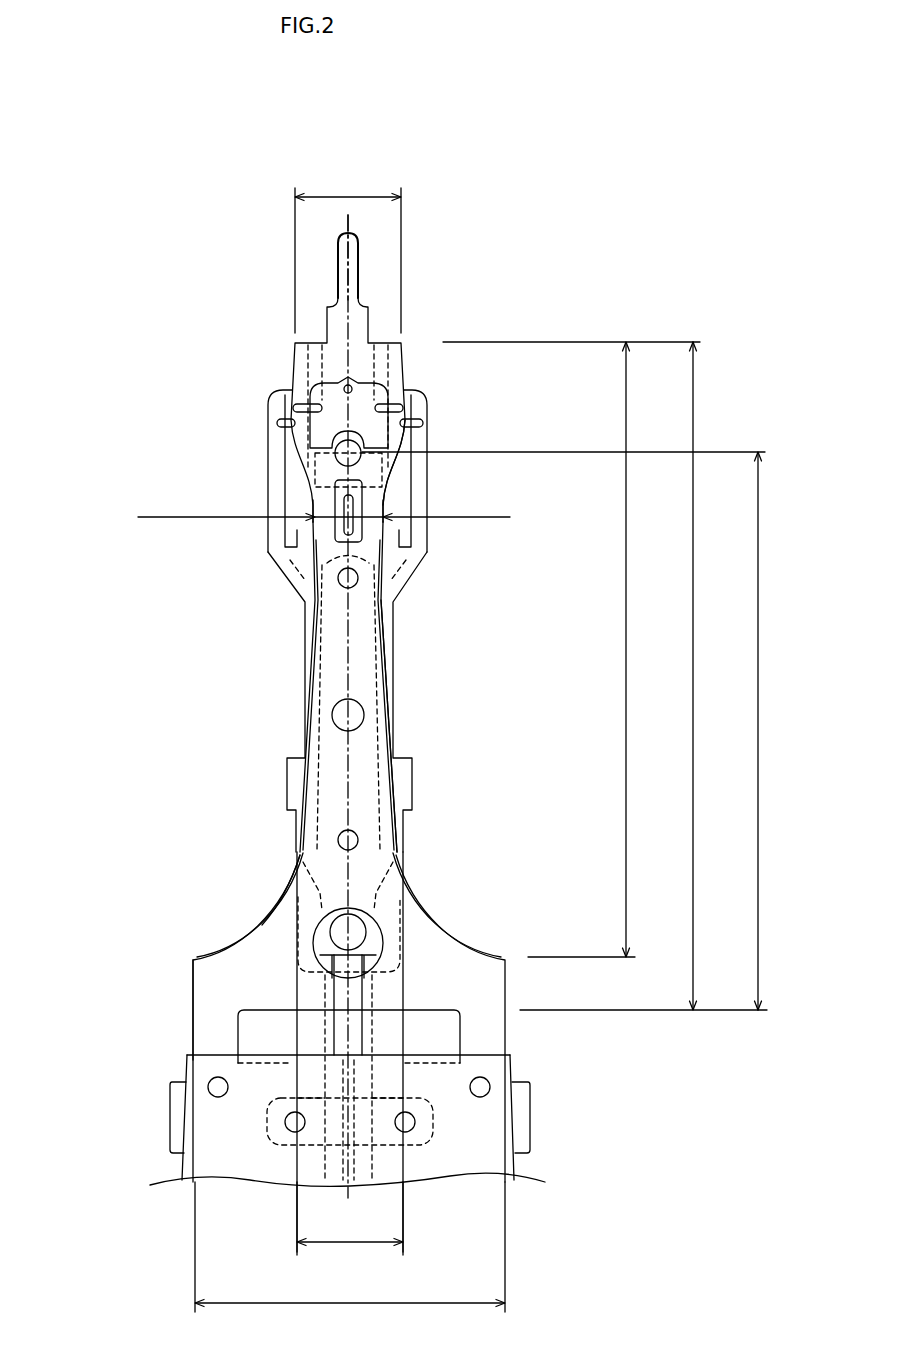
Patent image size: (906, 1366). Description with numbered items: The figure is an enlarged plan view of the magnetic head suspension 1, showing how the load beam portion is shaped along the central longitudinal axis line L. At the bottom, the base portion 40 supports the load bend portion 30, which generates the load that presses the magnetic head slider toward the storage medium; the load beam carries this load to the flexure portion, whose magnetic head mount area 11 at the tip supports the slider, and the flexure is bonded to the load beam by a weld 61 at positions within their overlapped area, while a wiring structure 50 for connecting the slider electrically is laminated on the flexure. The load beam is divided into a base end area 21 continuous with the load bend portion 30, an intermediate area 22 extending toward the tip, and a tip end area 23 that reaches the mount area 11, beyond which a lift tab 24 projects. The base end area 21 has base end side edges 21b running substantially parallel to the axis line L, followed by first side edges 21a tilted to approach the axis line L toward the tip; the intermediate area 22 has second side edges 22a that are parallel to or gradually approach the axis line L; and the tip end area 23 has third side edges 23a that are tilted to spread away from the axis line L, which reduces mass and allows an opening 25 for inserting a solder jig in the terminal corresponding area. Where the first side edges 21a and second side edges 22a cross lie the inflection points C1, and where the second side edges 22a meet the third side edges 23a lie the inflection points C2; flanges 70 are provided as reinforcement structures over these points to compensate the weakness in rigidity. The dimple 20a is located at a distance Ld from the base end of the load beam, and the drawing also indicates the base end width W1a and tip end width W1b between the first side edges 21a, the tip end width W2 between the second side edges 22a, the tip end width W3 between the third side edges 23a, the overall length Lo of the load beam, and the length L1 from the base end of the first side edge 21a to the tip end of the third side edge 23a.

The magnetic head suspension 1 is at (437, 272).
The magnetic head mount area 11 is at (365, 466).
The dimple 20a is at (335, 453).
The base end area 21 is at (530, 850).
The first side edges 21a is at (453, 920).
The base end side edges 21b is at (197, 975).
The intermediate area 22 is at (530, 517).
The second side edges 22a is at (312, 657).
The tip end area 23 is at (530, 517).
The third side edges 23a is at (392, 506).
The lift tab 24 is at (340, 262).
The opening 25 is at (375, 397).
The load bend portion 30 is at (212, 1033).
The base portion 40 is at (233, 1128).
The wiring structure 50 is at (278, 490).
The weld 61 is at (338, 578).
The flanges 70 is at (298, 860).
The inflection points C1 is at (406, 850).
The inflection points C2 is at (386, 523).
The central longitudinal axis line L is at (350, 217).
The length from base end of first side edge to tip end of third side edge L1 is at (571, 649).
The length from base end of base end area to tip end of tip end area Lo is at (643, 676).
The distance from base end of load beam portion to dimple Ld is at (563, 731).
The base end width between first side edges W1a is at (350, 1247).
The tip end width between first side edges W1b is at (350, 1217).
The tip end width between second side edges W2 is at (324, 507).
The tip end width between third side edges W3 is at (348, 252).